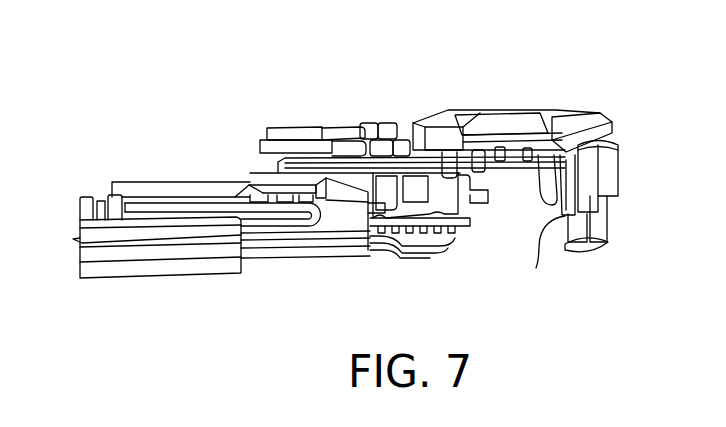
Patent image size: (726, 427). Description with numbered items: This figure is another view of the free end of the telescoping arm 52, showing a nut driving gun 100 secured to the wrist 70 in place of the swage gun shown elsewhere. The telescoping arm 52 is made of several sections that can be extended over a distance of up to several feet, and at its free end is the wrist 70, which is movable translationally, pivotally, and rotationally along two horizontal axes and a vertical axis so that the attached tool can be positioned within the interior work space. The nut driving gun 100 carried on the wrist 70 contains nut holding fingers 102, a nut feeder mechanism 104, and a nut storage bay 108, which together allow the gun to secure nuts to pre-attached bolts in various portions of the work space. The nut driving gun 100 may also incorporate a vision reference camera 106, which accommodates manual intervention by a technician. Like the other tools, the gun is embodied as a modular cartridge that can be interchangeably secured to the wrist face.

The telescoping arm 52 is at (143, 162).
The wrist 70 is at (549, 98).
The nut driving gun 100 is at (616, 162).
The nut holding fingers 102 is at (606, 233).
The nut feeder mechanism 104 is at (428, 252).
The vision reference camera 106 is at (546, 232).
The nut storage bay 108 is at (194, 196).